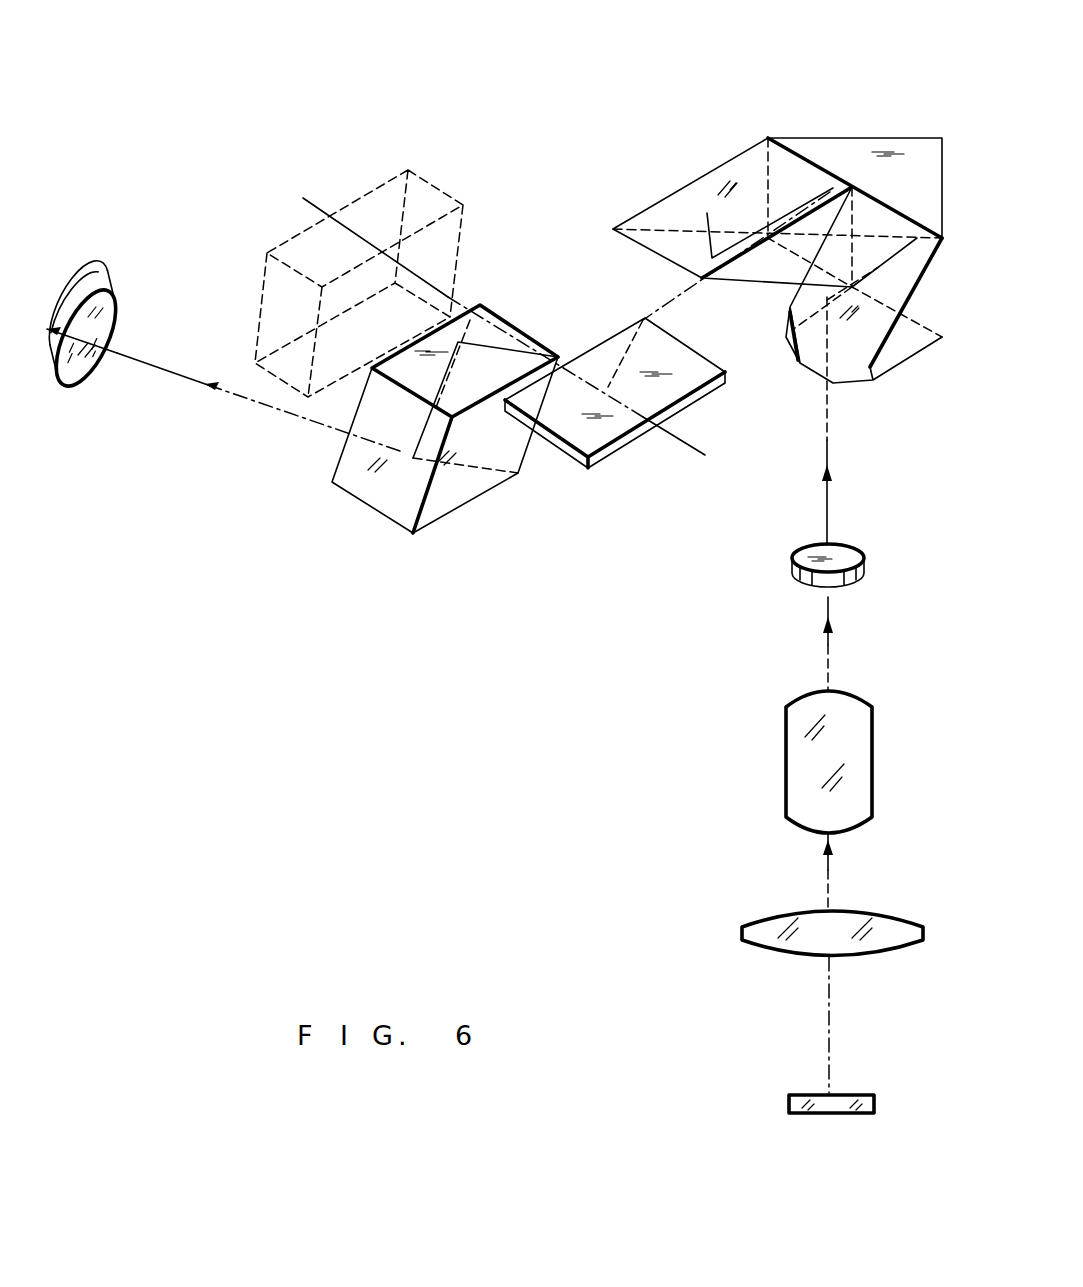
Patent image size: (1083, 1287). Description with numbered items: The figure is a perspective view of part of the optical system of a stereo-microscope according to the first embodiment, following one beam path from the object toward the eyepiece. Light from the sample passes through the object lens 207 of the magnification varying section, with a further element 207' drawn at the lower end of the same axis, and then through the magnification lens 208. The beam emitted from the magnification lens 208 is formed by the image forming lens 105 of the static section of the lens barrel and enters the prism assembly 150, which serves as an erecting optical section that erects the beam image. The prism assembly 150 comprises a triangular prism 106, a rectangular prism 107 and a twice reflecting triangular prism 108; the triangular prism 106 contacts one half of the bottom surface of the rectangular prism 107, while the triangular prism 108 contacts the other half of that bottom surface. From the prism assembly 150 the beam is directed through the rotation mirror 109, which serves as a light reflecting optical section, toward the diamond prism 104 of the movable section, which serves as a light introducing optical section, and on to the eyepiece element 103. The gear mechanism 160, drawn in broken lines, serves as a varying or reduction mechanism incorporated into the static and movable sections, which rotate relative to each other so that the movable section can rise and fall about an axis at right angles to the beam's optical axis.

The condenser lens 103 is at (118, 398).
The diamond prism 104 is at (473, 483).
The image forming lens 105 is at (850, 557).
The triangular prism 106 is at (903, 352).
The rectangular prism 107 is at (905, 153).
The twice reflecting triangular prism 108 is at (713, 192).
The rotation mirror 109 is at (612, 448).
The prism assembly 150 is at (777, 247).
The gear mechanism 160 is at (440, 190).
The object lens 207 is at (827, 901).
The plate 207' is at (804, 1077).
The magnification lens 208 is at (797, 693).